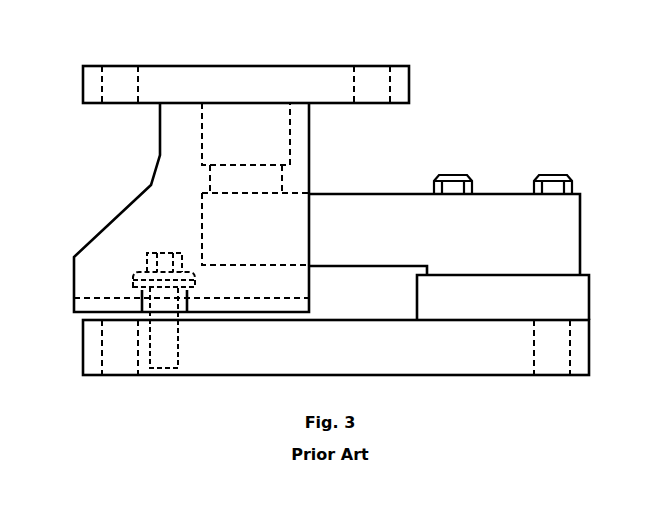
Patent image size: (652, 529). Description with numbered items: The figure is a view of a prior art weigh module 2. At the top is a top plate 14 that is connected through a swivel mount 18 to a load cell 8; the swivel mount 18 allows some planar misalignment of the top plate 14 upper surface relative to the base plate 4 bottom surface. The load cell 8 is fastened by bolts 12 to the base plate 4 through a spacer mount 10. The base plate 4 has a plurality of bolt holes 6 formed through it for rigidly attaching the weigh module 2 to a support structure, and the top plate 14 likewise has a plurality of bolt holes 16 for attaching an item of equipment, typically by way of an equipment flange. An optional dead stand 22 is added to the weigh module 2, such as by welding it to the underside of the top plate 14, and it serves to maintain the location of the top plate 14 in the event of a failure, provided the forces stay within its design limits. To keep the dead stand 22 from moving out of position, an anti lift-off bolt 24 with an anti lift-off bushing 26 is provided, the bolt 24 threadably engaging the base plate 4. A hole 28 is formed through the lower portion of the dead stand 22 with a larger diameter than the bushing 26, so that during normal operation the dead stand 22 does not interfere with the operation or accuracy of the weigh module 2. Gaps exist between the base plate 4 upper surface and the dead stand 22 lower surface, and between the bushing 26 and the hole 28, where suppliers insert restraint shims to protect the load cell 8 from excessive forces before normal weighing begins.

The weigh module 2 is at (605, 118).
The base plate 4 is at (247, 377).
The bolt holes 6 is at (137, 352).
The load cell 8 is at (368, 266).
The spacer mount 10 is at (590, 303).
The bolts 12 is at (545, 174).
The top plate 14 is at (225, 64).
The bolt holes 16 is at (137, 80).
The swivel mount 18 is at (290, 153).
The dead stand 22 is at (153, 168).
The anti lift-off bolt 24 is at (150, 253).
The anti lift-off bushing 26 is at (133, 280).
The hole 28 is at (192, 305).